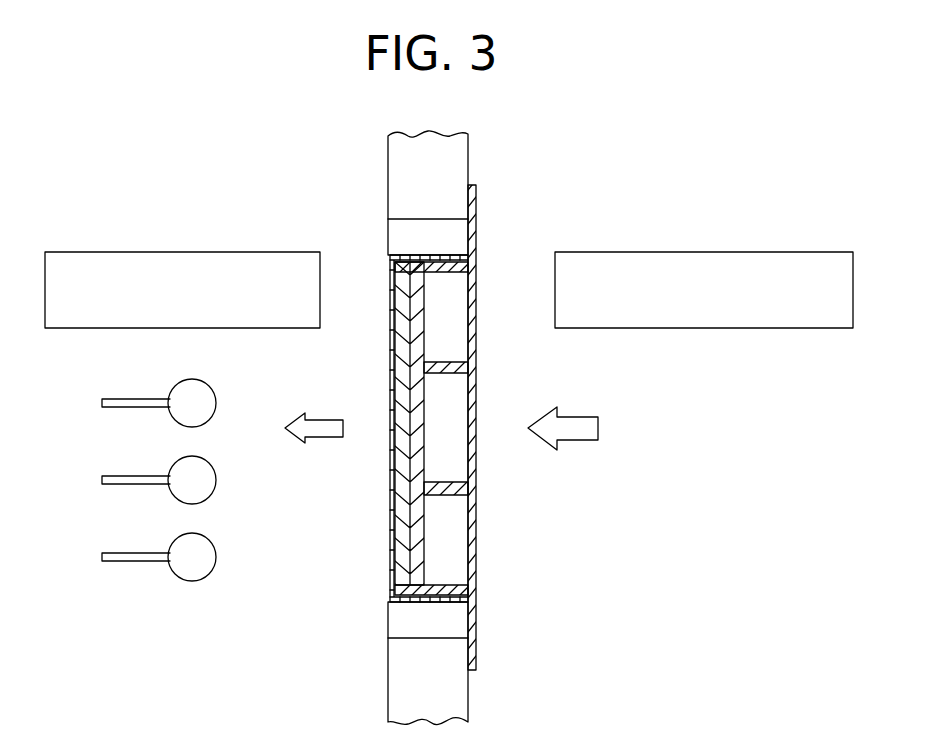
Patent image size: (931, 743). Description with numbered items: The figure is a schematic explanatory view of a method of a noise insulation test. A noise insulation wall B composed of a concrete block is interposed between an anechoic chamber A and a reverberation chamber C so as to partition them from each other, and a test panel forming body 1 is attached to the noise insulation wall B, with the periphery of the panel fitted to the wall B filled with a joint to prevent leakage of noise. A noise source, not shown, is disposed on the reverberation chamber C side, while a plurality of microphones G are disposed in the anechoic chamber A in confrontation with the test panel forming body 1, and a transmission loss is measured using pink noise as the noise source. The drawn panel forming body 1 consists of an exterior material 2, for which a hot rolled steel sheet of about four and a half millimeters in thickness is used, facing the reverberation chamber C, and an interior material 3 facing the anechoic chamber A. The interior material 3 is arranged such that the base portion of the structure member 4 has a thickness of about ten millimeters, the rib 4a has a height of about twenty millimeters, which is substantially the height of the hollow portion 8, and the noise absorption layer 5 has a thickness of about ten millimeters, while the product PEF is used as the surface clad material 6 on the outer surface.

The test panel forming body 1 is at (497, 244).
The exterior material 2 is at (478, 500).
The interior material 3 is at (387, 598).
The structure member 4 is at (461, 428).
The rib 4a is at (450, 355).
The noise absorption layer 5 is at (402, 512).
The surface clad material 6 is at (390, 283).
The hollow portion 8 is at (455, 453).
The anechoic chamber A is at (321, 162).
The noise insulation wall B is at (462, 160).
The reverberation chamber C is at (720, 367).
The microphone G is at (213, 388).